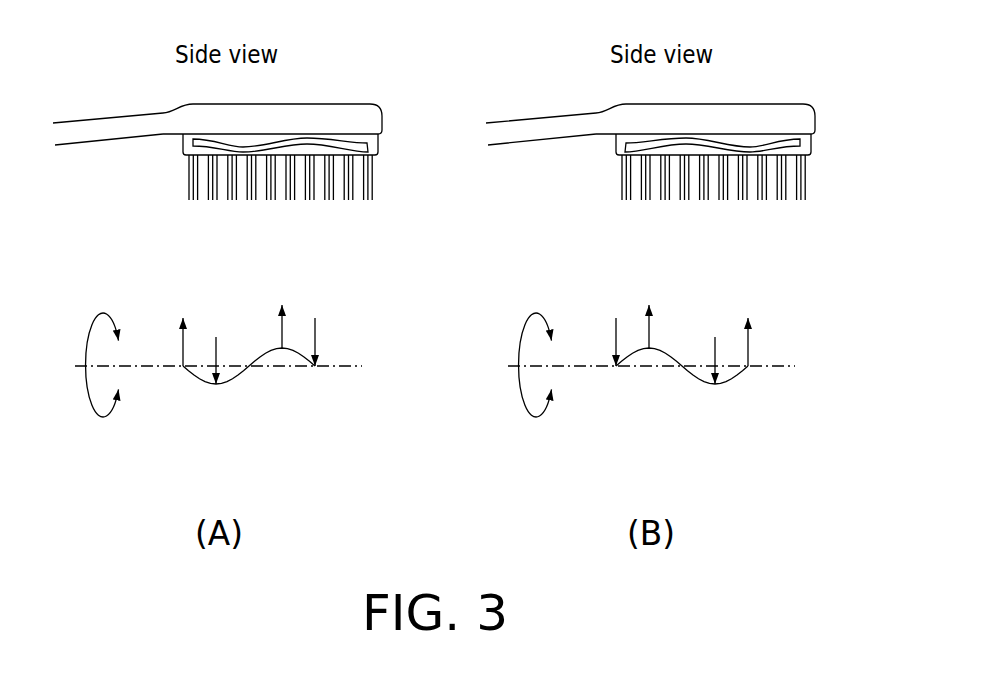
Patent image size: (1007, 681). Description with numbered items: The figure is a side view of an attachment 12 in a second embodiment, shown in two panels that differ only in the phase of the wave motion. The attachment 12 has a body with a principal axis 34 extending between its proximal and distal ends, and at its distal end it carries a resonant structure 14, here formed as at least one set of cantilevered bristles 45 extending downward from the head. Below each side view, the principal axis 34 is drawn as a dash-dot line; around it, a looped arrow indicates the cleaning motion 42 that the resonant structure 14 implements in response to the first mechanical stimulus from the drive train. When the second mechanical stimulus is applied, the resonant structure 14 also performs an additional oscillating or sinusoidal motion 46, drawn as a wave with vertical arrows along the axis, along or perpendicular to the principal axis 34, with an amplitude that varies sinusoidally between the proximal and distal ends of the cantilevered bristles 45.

The attachment 12 is at (78, 110).
The resonant structure 14 is at (348, 80).
The set of cantilevered bristles 45 is at (352, 225).
The principal axis 34 is at (163, 367).
The oscillating or sinusoidal motion 46 is at (240, 375).
The cleaning motion 42 is at (103, 417).